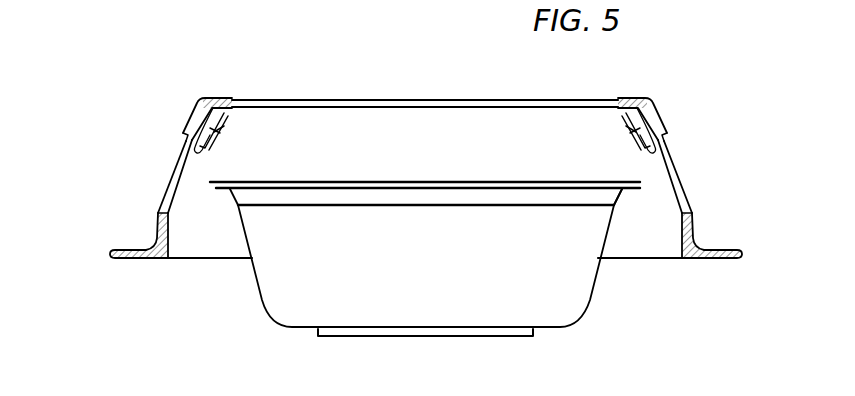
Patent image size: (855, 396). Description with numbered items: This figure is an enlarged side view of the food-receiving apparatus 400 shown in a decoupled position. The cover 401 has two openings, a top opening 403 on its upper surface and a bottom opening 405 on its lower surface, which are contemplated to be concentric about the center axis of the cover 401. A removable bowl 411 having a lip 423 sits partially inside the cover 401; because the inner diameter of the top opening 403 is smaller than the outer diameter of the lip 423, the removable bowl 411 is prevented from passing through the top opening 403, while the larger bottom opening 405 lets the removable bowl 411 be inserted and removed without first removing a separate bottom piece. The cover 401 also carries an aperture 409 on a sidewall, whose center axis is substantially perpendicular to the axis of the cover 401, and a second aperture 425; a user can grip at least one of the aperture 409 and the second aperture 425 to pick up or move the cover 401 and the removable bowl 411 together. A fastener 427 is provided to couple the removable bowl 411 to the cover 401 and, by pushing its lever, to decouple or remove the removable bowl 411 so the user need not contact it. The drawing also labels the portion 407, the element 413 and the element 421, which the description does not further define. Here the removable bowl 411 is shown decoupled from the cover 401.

The container assembly 400 is at (672, 62).
The cover 401 is at (200, 95).
The top opening 403 is at (512, 102).
The bottom opening 405 is at (186, 261).
The tray flange 407 is at (205, 242).
The aperture 409 is at (176, 186).
The removable bowl 411 is at (583, 316).
The hook 413 is at (218, 100).
The left foot 421 is at (130, 247).
The lip 423 is at (630, 190).
The second aperture 425 is at (674, 184).
The fastener 427 is at (646, 131).